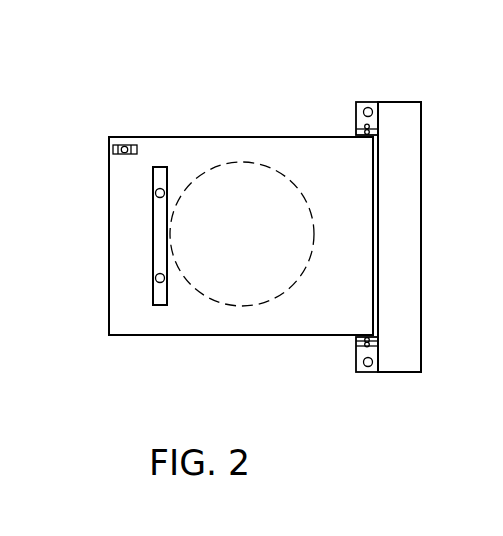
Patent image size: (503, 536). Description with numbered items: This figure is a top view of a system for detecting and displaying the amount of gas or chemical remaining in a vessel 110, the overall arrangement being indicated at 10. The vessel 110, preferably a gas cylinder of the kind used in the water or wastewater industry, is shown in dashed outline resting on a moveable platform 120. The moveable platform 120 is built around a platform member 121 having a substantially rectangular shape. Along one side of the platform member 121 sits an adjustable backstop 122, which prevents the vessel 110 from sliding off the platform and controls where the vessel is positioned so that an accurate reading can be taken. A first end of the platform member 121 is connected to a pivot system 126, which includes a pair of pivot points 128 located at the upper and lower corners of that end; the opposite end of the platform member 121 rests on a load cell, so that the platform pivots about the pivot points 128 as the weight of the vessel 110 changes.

The ventilation system 10 is at (3, 99).
The vessel 110 is at (238, 310).
The moveable platform 120 is at (244, 235).
The platform member 121 is at (108, 286).
The adjustable backstop 122 is at (162, 165).
The pivot system 126 is at (378, 103).
The pivot points 128 is at (380, 341).